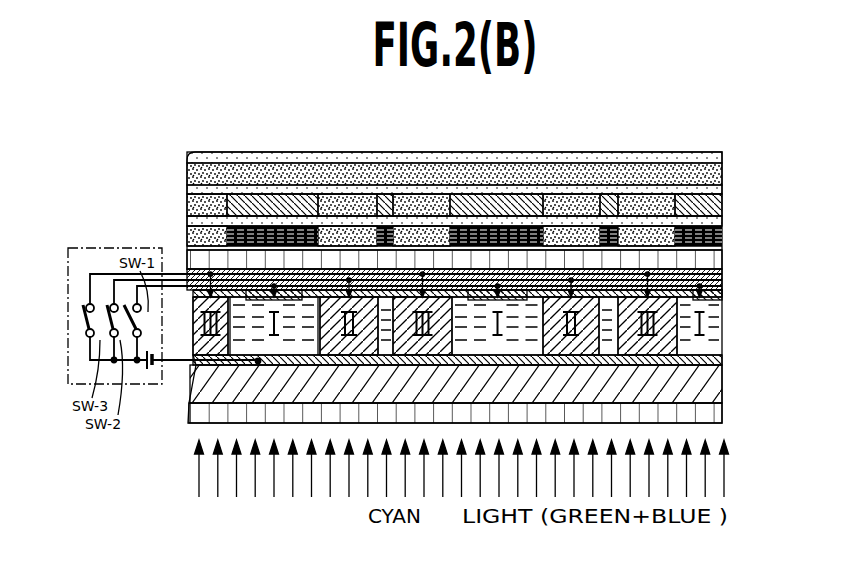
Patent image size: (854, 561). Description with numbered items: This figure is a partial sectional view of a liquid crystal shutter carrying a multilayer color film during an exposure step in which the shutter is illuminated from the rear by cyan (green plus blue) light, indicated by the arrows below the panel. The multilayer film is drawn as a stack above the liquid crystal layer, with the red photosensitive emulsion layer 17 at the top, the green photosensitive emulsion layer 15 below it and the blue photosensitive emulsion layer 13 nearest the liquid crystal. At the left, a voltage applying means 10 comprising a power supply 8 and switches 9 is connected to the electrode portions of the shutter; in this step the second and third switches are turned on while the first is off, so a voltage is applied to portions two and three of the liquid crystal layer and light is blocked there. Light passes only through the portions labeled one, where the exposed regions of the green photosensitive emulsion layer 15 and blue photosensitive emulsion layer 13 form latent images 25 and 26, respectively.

The power supply 8 is at (148, 387).
The switches 9 is at (88, 300).
The voltage applying means 10 is at (100, 247).
The blue photosensitive emulsion layer 13 is at (186, 236).
The green photosensitive emulsion layer 15 is at (186, 206).
The red photosensitive emulsion layer 17 is at (186, 178).
The latent image 25 is at (264, 205).
The latent image 26 is at (304, 232).